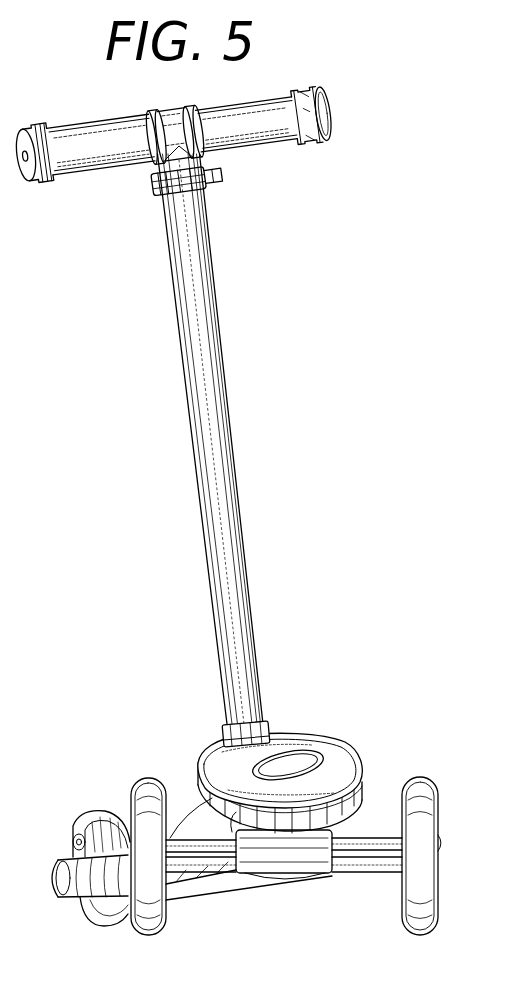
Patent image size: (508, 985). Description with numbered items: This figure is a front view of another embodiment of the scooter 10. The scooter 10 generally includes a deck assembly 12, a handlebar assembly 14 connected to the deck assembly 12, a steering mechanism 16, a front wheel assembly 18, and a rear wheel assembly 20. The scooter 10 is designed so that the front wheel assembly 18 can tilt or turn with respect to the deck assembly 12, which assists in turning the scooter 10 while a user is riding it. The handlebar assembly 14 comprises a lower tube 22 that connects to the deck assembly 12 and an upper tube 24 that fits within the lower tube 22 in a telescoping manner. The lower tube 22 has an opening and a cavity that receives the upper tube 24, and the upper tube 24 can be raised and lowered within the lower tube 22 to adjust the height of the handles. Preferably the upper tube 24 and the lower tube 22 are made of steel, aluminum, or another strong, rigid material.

The scooter 10 is at (322, 208).
The deck assembly 12 is at (303, 748).
The handlebar assembly 14 is at (222, 338).
The steering mechanism 16 is at (300, 862).
The front wheel assembly 18 is at (418, 785).
The rear wheel assembly 20 is at (95, 812).
The lower tube 22 is at (228, 400).
The upper tube 24 is at (184, 111).